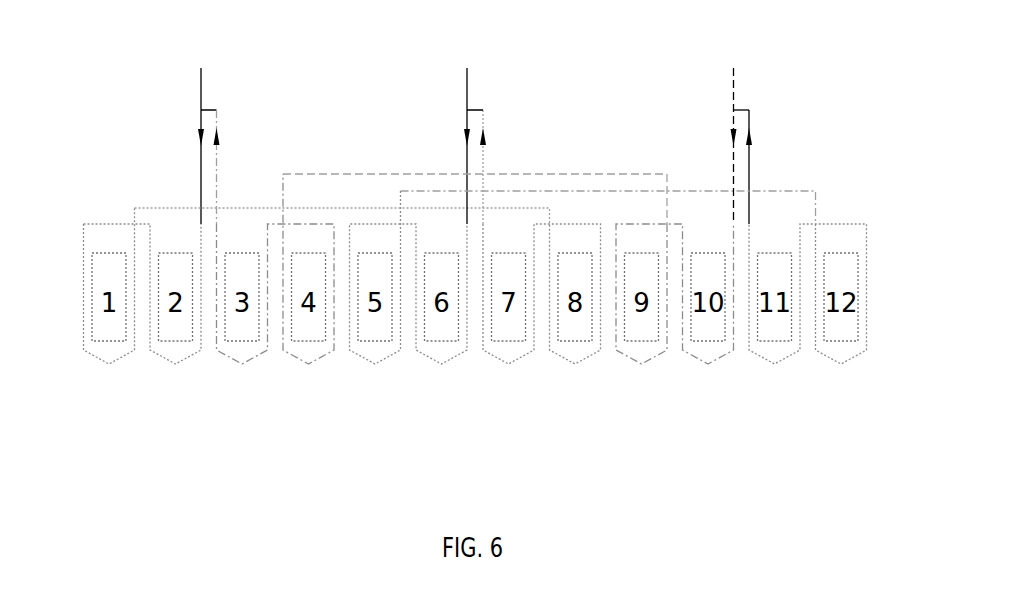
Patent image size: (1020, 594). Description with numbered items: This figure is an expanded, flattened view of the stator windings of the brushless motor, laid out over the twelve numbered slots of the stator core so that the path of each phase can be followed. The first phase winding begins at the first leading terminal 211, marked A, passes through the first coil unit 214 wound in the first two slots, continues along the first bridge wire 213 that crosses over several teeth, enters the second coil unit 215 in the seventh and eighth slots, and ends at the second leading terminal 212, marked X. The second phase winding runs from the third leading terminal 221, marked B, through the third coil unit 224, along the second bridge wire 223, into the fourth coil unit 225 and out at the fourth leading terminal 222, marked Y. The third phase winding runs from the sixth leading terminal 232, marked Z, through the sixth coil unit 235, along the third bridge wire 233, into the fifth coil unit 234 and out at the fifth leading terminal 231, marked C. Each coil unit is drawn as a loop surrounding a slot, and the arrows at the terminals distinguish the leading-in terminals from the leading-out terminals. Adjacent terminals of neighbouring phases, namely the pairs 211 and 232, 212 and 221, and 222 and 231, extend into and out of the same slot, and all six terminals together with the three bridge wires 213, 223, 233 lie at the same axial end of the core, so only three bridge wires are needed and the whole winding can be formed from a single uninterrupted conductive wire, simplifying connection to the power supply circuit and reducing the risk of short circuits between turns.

The first leading terminal 211 is at (201, 88).
The second leading terminal 212 is at (483, 123).
The first bridge wire 213 is at (312, 202).
The first coil unit 214 is at (97, 361).
The second coil unit 215 is at (497, 361).
The third leading terminal 221 is at (470, 93).
The fourth leading terminal 222 is at (750, 125).
The second bridge wire 223 is at (580, 191).
The third coil unit 224 is at (364, 361).
The fourth coil unit 225 is at (763, 361).
The fifth leading terminal 231 is at (737, 90).
The sixth leading terminal 232 is at (220, 116).
The third bridge wire 233 is at (656, 174).
The fifth coil unit 234 is at (630, 359).
The sixth coil unit 235 is at (232, 361).